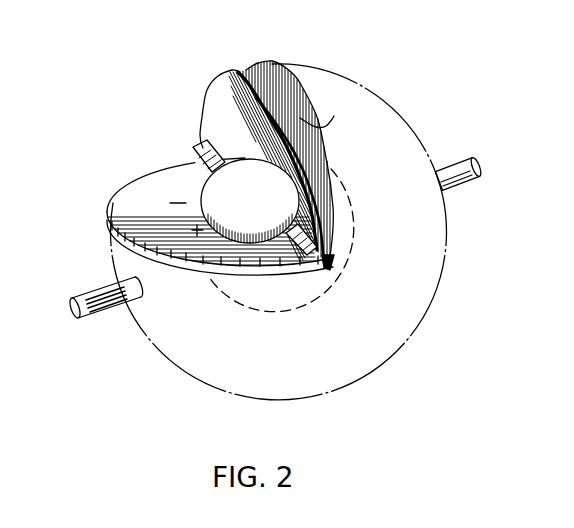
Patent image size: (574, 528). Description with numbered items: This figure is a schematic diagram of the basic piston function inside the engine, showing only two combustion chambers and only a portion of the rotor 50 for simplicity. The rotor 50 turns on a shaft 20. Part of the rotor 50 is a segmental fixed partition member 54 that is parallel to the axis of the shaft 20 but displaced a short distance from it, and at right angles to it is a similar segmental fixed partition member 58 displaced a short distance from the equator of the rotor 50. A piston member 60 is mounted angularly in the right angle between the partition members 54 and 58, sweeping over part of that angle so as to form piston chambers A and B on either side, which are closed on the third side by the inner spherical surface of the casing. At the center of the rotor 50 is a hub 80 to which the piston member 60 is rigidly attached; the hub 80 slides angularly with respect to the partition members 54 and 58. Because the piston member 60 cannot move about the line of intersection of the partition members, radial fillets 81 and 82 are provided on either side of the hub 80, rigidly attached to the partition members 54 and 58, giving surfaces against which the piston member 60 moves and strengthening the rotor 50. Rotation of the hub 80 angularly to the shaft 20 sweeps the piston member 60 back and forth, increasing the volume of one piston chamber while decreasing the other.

The shaft 20 is at (450, 170).
The rotor 50 is at (412, 331).
The segmental fixed partition member 54 is at (145, 193).
The segmental fixed partition member 58 is at (282, 80).
The piston member 60 is at (228, 93).
The hub 80 is at (250, 217).
The radial fillet 81 is at (320, 257).
The radial fillet 82 is at (200, 149).